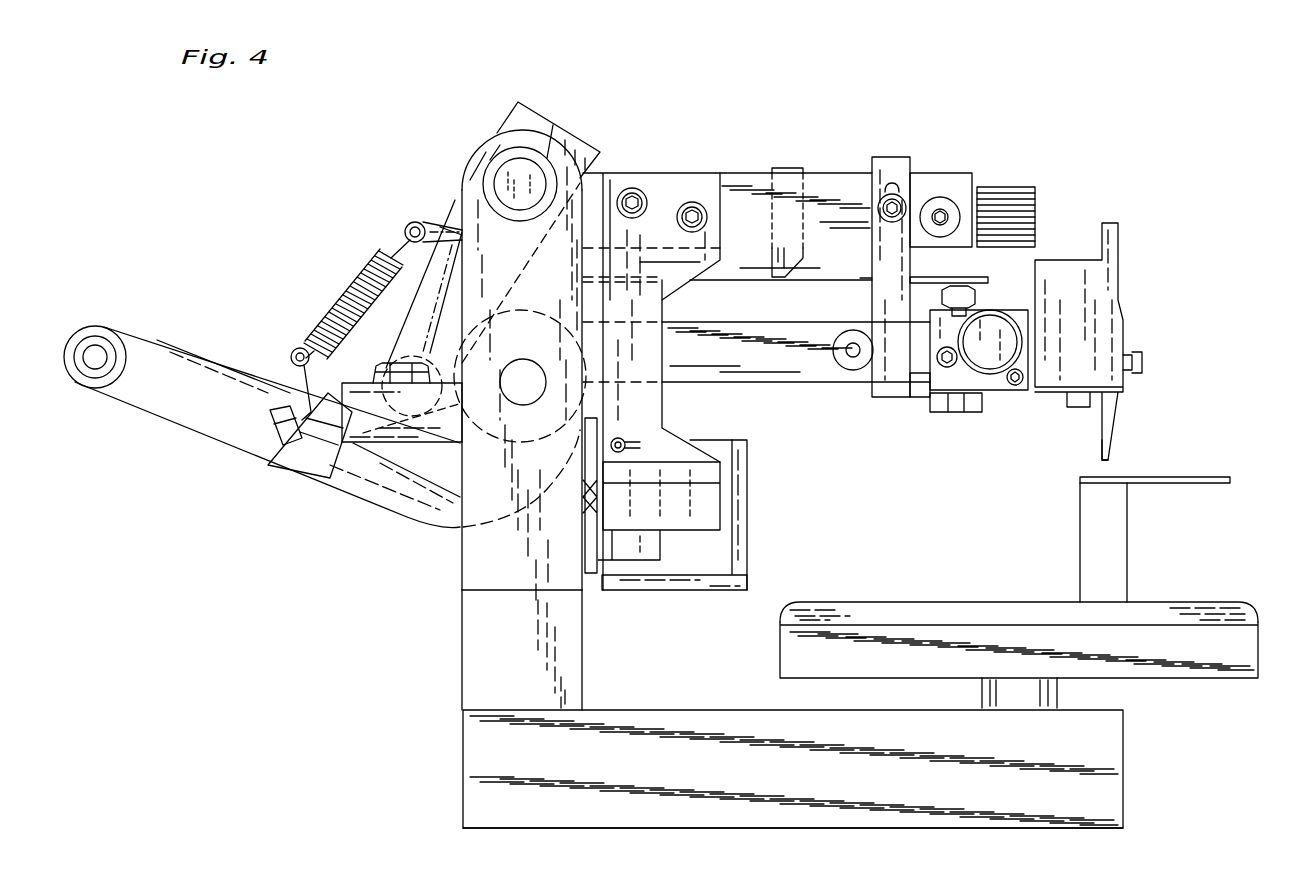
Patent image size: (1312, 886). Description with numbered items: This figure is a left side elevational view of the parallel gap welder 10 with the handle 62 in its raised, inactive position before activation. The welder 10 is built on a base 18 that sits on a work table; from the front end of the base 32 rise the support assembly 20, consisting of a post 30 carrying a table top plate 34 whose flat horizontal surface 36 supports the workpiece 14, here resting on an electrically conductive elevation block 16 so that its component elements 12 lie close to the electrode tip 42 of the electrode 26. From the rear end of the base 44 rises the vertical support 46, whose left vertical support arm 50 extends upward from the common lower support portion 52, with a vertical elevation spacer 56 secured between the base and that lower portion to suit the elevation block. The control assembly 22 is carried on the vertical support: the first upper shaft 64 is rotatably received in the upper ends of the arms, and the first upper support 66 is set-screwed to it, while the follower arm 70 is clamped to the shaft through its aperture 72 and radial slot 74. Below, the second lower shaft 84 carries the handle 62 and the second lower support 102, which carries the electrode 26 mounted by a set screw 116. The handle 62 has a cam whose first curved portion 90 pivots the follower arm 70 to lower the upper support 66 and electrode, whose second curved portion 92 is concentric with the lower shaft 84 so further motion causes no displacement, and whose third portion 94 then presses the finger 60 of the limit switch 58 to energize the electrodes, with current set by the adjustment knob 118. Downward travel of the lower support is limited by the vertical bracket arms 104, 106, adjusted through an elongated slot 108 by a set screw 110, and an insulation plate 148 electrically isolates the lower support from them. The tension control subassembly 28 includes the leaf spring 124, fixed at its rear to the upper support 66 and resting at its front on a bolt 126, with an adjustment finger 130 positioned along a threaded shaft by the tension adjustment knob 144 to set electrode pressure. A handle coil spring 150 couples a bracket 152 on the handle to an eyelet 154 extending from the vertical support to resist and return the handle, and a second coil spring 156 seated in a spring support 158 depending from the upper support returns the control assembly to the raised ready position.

The parallel gap welder 10 is at (282, 170).
The component elements 12 is at (1230, 480).
The workpiece 14 is at (1213, 462).
The elevation block 16 is at (1080, 514).
The base 18 is at (1075, 830).
The support assembly 20 is at (1258, 575).
The control assembly 22 is at (268, 292).
The electrode 26 is at (1115, 417).
The tension control subassembly 28 is at (1052, 122).
The post 30 is at (1058, 690).
The front end of the base 32 is at (1125, 770).
The table top plate 34 is at (1258, 660).
The flat horizontal surface 36 is at (1172, 602).
The electrode tip 42 is at (1108, 466).
The rear end of the base 44 is at (462, 770).
The vertical support 46 is at (378, 575).
The left vertical support arm 50 is at (470, 152).
The lower support portion 52 is at (462, 575).
The vertical elevation spacer 56 is at (462, 678).
The limit switch 58 is at (655, 545).
The finger 60 is at (665, 430).
The handle 62 is at (192, 420).
The first upper shaft 64 is at (535, 180).
The first upper support 66 is at (838, 175).
The follower arm 70 is at (452, 215).
The aperture 72 is at (520, 183).
The radial slot 74 is at (556, 146).
The second lower shaft 84 is at (530, 405).
The first curved portion 90 is at (448, 338).
The second curved portion 92 is at (455, 288).
The third portion 94 is at (548, 528).
The second lower support 102 is at (788, 377).
The vertical bracket arm 104 is at (898, 155).
The vertical bracket arm 106 is at (912, 170).
The elongated slot 108 is at (902, 170).
The set screw 110 is at (890, 190).
The set screw 116 is at (1145, 362).
The adjustment knob 118 is at (988, 366).
The leaf spring 124 is at (978, 276).
The bolt 126 is at (980, 286).
The adjustment finger 130 is at (792, 168).
The tension adjustment knob 144 is at (1036, 188).
The insulation plate 148 is at (922, 385).
The handle coil spring 150 is at (337, 300).
The bracket 152 is at (285, 470).
The spring eye 154 is at (408, 222).
The second coil spring 156 is at (585, 555).
The spring support 158 is at (630, 540).